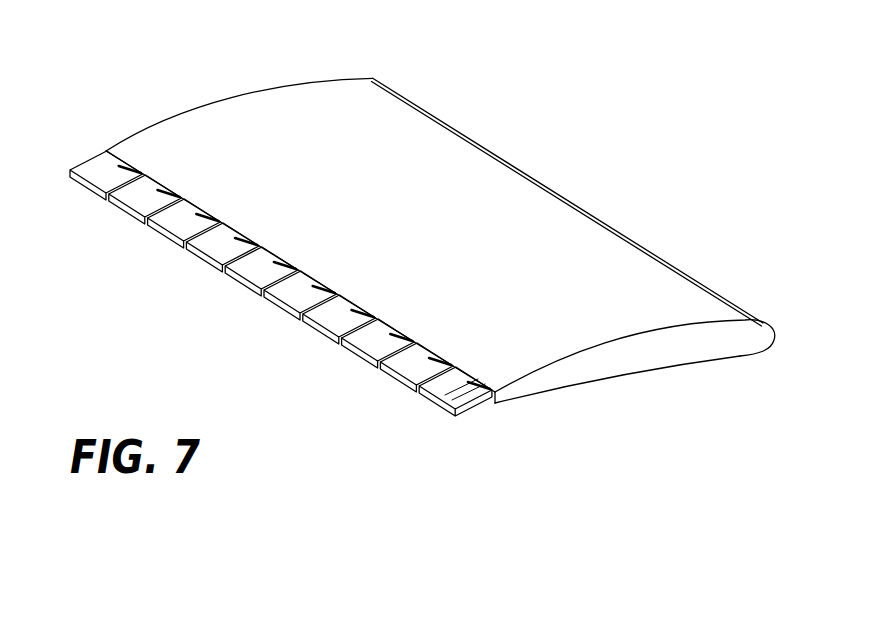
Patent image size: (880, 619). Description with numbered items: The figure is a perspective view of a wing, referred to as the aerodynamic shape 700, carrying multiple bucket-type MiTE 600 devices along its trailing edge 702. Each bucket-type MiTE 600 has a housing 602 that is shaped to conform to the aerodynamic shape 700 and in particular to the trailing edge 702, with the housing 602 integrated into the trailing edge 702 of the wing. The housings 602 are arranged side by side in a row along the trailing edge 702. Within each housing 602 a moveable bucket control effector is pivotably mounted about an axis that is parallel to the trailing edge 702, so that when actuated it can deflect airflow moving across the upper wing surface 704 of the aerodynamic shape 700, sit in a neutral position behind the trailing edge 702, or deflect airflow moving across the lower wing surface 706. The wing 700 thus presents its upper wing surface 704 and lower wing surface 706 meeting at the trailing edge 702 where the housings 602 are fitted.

The aerodynamic shape 700 is at (440, 257).
The trailing edge 702 is at (493, 406).
The upper wing surface 704 is at (192, 110).
The lower wing surface 706 is at (653, 370).
The bucket-type MiTE 600 is at (281, 315).
The housing 602 is at (418, 389).